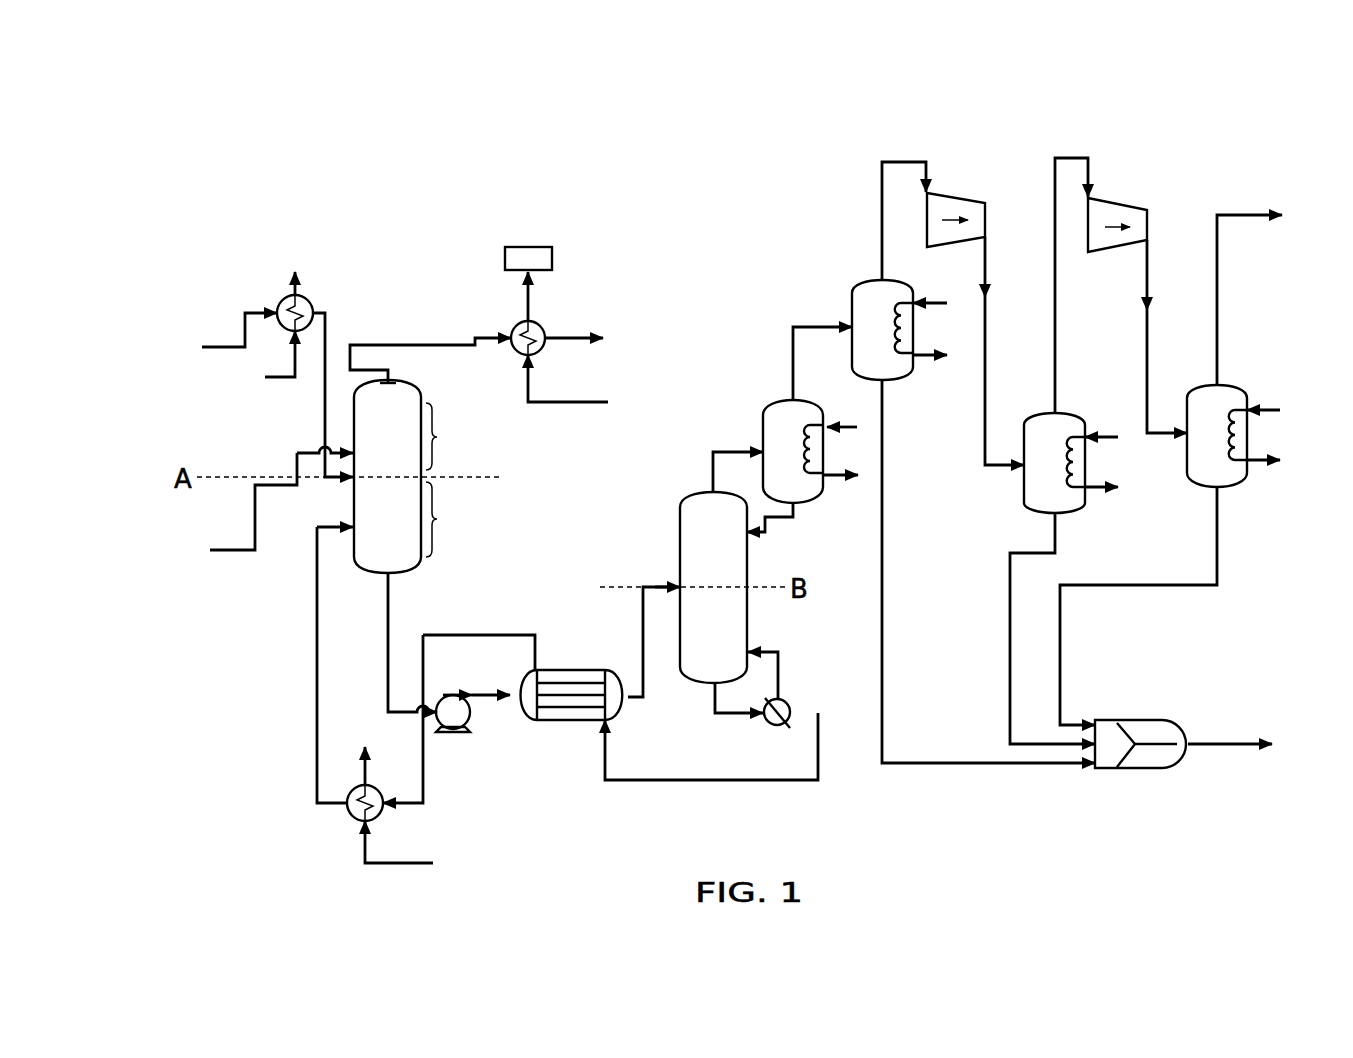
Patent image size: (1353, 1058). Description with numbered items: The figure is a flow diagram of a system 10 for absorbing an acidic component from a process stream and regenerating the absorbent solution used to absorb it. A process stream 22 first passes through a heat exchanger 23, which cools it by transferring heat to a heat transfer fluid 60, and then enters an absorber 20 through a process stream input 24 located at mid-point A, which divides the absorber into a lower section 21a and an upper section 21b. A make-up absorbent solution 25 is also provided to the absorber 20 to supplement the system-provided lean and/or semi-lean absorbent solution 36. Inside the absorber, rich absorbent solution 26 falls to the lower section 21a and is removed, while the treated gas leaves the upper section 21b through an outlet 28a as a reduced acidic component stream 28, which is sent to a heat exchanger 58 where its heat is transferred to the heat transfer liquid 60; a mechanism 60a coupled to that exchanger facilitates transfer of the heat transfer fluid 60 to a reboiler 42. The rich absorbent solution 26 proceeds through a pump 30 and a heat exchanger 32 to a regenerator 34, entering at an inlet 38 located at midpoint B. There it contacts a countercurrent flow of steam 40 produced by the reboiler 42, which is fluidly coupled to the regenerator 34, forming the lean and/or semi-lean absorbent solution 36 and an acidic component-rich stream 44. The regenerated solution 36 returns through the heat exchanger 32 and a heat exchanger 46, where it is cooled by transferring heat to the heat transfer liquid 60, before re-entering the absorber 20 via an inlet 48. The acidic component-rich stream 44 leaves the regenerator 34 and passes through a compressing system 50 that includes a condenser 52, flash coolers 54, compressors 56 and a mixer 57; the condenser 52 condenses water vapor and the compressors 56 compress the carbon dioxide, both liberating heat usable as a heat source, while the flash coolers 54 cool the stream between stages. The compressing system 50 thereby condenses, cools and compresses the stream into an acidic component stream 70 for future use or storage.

The system 10 is at (398, 250).
The absorber 20 is at (440, 487).
The lower section 21a is at (453, 519).
The upper section 21b is at (453, 436).
The process stream 22 is at (232, 347).
The heat exchanger 23 is at (308, 300).
The process stream input 24 is at (353, 484).
The make-up absorbent solution 25 is at (233, 550).
The rich absorbent solution 26 is at (390, 598).
The reduced acidic component stream 28 is at (352, 345).
The outlet 28a is at (396, 382).
The pump 30 is at (466, 728).
The heat exchanger 32 is at (580, 670).
The regenerator 34 is at (680, 507).
The lean and/or semi-lean absorbent solution 36 is at (317, 726).
The inlet 38 is at (672, 593).
The steam 40 is at (784, 676).
The reboiler 42 is at (790, 703).
The acidic component-rich stream 44 is at (714, 452).
The heat exchanger 46 is at (350, 815).
The inlet 48 is at (351, 535).
The compressing system 50 is at (1003, 135).
The condenser 52 is at (765, 405).
The flash cooler 54 is at (905, 375).
The compressor 56 is at (975, 200).
The mixer 57 is at (1155, 720).
The heat exchanger 58 is at (545, 320).
The heat transfer fluid 60 is at (268, 380).
The mechanism 60a is at (553, 257).
The acidic component stream 70 is at (1245, 744).